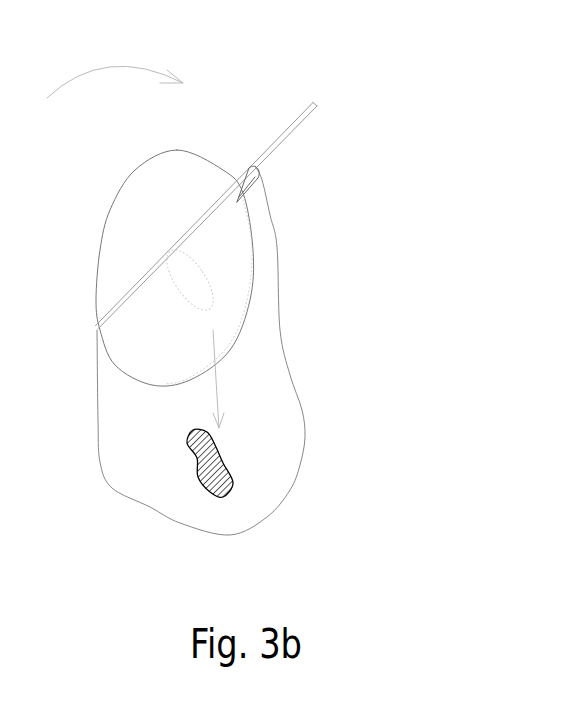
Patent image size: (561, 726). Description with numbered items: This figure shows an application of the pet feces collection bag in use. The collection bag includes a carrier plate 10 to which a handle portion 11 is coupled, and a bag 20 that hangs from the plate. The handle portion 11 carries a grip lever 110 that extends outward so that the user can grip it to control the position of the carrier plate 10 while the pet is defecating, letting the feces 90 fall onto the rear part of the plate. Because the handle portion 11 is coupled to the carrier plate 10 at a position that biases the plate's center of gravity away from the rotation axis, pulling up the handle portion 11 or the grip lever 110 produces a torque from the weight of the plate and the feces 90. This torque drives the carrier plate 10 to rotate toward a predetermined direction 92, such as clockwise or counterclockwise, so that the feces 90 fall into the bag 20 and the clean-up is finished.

The carrier plate 10 is at (168, 172).
The handle portion 11 is at (148, 255).
The bag 20 is at (280, 410).
The feces 90 is at (193, 460).
The predetermined direction 92 is at (105, 67).
The grip lever 110 is at (295, 123).